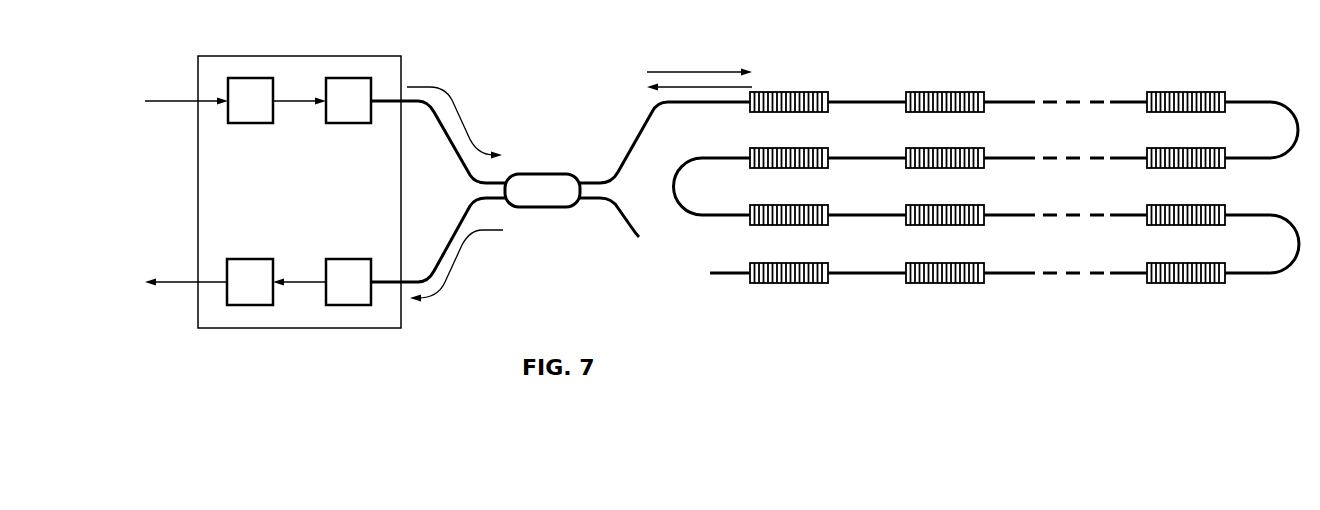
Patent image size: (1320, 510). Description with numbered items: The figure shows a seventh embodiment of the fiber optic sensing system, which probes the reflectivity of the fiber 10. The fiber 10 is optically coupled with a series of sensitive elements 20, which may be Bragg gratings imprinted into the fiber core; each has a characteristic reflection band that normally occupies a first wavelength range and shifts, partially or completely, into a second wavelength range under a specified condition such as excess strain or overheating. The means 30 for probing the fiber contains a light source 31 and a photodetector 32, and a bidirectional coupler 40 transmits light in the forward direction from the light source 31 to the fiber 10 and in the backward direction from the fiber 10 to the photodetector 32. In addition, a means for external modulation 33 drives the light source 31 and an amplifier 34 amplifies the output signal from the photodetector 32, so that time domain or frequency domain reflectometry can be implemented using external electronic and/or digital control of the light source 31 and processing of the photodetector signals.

The fiber 10 is at (1046, 76).
The sensitive elements 20 is at (1200, 290).
The means for probing optical transmission of the fiber 30 is at (198, 205).
The light source 31 is at (341, 78).
The photodetector 32 is at (341, 305).
The means for external modulation 33 is at (251, 78).
The amplifier 34 is at (251, 305).
The bidirectional coupler 40 is at (528, 174).